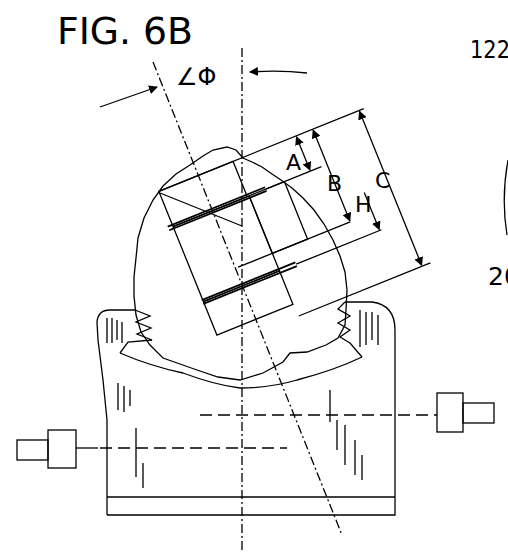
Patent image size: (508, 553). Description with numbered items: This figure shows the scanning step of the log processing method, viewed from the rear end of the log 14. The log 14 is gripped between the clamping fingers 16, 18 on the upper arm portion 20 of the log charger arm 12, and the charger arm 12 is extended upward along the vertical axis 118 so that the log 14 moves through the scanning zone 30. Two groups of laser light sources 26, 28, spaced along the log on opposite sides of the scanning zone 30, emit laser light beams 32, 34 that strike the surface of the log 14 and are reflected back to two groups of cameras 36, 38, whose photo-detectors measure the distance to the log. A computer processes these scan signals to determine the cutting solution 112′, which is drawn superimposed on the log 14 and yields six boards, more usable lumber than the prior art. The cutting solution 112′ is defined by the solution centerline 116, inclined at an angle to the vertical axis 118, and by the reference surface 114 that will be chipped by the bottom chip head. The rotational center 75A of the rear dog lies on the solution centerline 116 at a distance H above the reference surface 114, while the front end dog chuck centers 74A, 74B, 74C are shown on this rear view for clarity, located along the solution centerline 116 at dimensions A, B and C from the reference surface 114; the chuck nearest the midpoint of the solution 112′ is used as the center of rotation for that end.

The log charger arm 12 is at (408, 507).
The log 14 is at (328, 272).
The clamping finger 16 is at (100, 338).
The clamping finger 18 is at (382, 320).
The upper arm portion 20 is at (380, 462).
The laser light source group 26 is at (62, 431).
The laser light source group 28 is at (449, 393).
The scanning zone 30 is at (228, 432).
The laser light beam 32 is at (147, 443).
The laser light beam 34 is at (338, 408).
The camera group 36 is at (30, 440).
The camera group 38 is at (483, 403).
The chuck center 74A is at (185, 222).
The chuck center 74B is at (233, 263).
The chuck center 74C is at (232, 326).
The rotational center of rear dog 75A is at (233, 290).
The cutting solution 112′ is at (160, 233).
The reference surface 114 is at (333, 107).
The solution centerline 116 is at (167, 122).
The vertical axis 118 is at (250, 120).